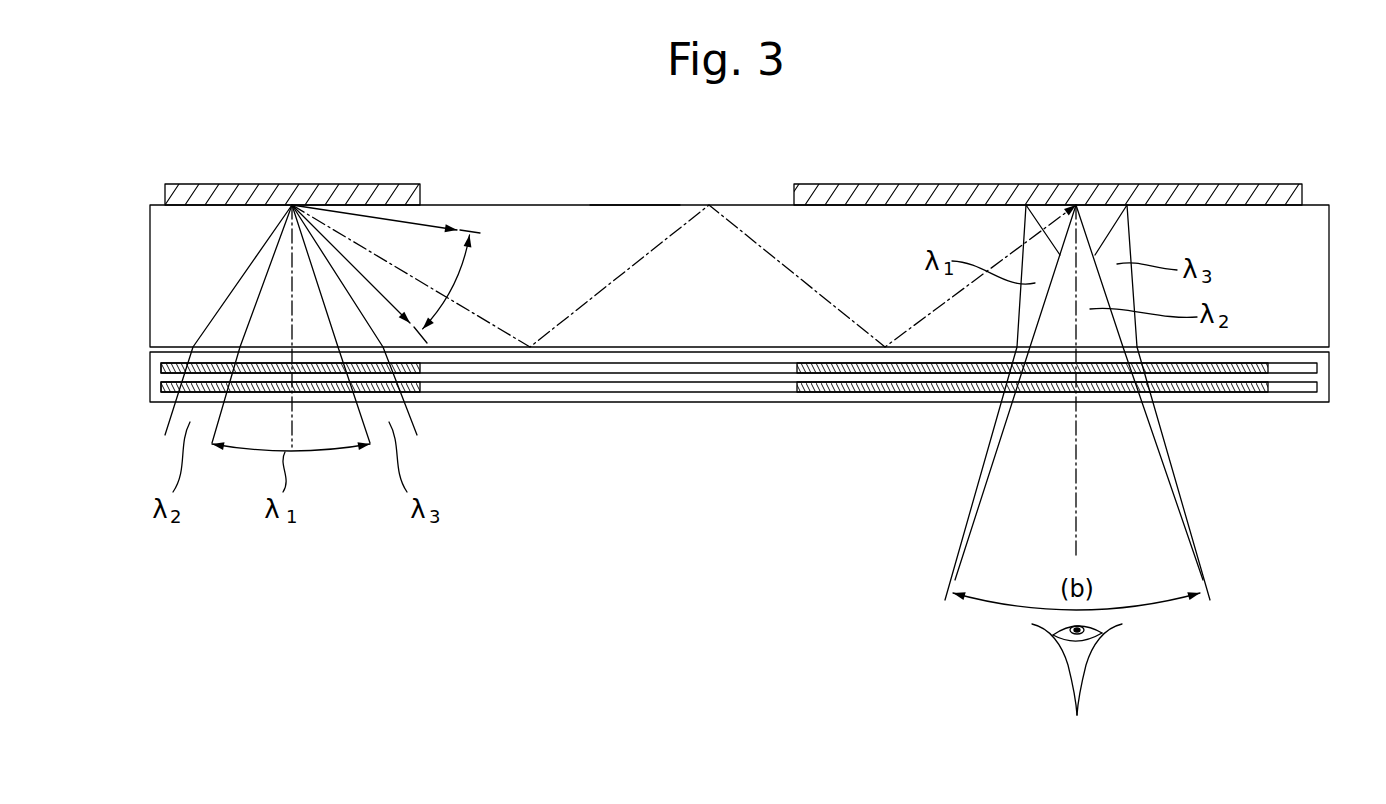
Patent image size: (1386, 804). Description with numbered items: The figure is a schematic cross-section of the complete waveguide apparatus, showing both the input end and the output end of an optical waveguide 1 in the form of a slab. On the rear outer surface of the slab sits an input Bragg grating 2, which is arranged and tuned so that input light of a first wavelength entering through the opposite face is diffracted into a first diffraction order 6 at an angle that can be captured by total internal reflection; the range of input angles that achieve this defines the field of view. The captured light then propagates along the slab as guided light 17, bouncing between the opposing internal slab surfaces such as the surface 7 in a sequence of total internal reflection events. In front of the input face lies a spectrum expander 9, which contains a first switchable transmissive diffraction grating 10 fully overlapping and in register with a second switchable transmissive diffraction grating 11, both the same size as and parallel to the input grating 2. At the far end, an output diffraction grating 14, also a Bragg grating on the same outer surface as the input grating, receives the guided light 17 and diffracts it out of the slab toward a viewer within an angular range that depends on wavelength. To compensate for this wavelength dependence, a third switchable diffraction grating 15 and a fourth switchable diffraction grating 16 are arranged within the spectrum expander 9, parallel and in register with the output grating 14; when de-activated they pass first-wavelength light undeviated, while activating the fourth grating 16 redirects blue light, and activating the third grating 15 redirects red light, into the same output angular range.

The optical waveguide 1 is at (543, 245).
The Bragg grating 2 is at (232, 193).
The first diffraction order 6 is at (458, 270).
The internal slab surface 7 is at (640, 203).
The spectrum expander 9 is at (727, 390).
The first switchable transmissive diffraction grating 10 is at (168, 387).
The second switchable transmissive diffraction grating 11 is at (168, 367).
The output diffraction grating 14 is at (947, 192).
The third switchable diffraction grating 15 is at (1238, 366).
The fourth switchable diffraction grating 16 is at (1253, 392).
The guided light 17 is at (745, 232).